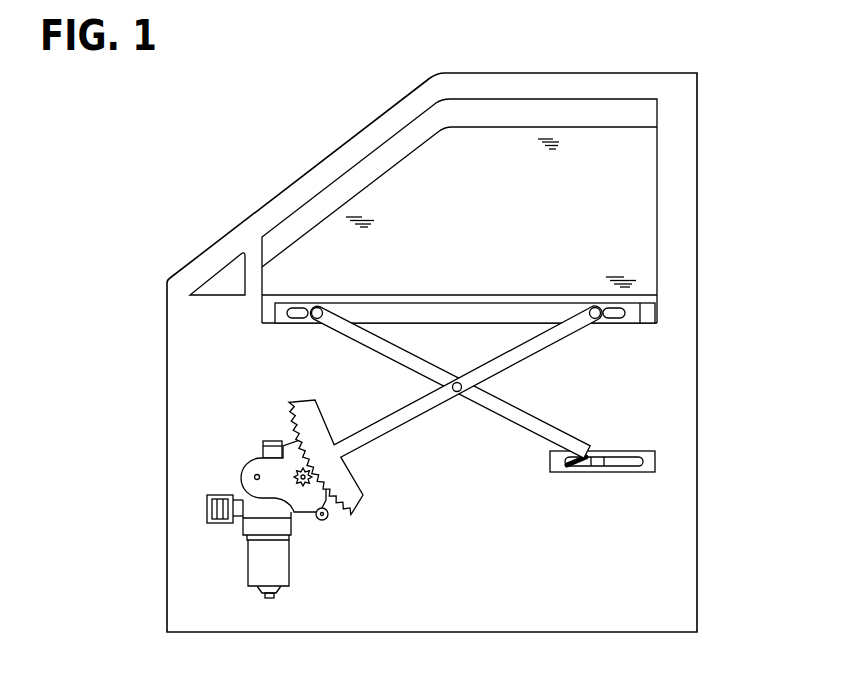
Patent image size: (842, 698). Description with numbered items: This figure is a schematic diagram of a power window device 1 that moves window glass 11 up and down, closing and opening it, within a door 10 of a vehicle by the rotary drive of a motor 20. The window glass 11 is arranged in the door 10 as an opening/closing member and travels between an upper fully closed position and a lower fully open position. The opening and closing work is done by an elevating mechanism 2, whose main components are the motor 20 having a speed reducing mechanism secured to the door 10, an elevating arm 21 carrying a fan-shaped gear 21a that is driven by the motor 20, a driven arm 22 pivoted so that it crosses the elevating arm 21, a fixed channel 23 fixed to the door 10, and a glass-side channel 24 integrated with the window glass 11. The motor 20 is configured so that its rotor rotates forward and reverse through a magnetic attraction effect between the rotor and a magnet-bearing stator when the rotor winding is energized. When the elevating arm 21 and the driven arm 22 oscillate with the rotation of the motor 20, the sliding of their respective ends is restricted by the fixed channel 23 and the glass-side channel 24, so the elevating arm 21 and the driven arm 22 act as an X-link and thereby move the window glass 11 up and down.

The power window device 1 is at (232, 169).
The elevating mechanism 2 is at (218, 425).
The door 10 is at (677, 383).
The window glass 11 is at (483, 142).
The motor 20 is at (255, 568).
The elevating arm 21 is at (540, 345).
The fan-shaped gear 21a is at (355, 495).
The driven arm 22 is at (500, 412).
The fixed channel 23 is at (618, 468).
The glass-side channel 24 is at (655, 308).